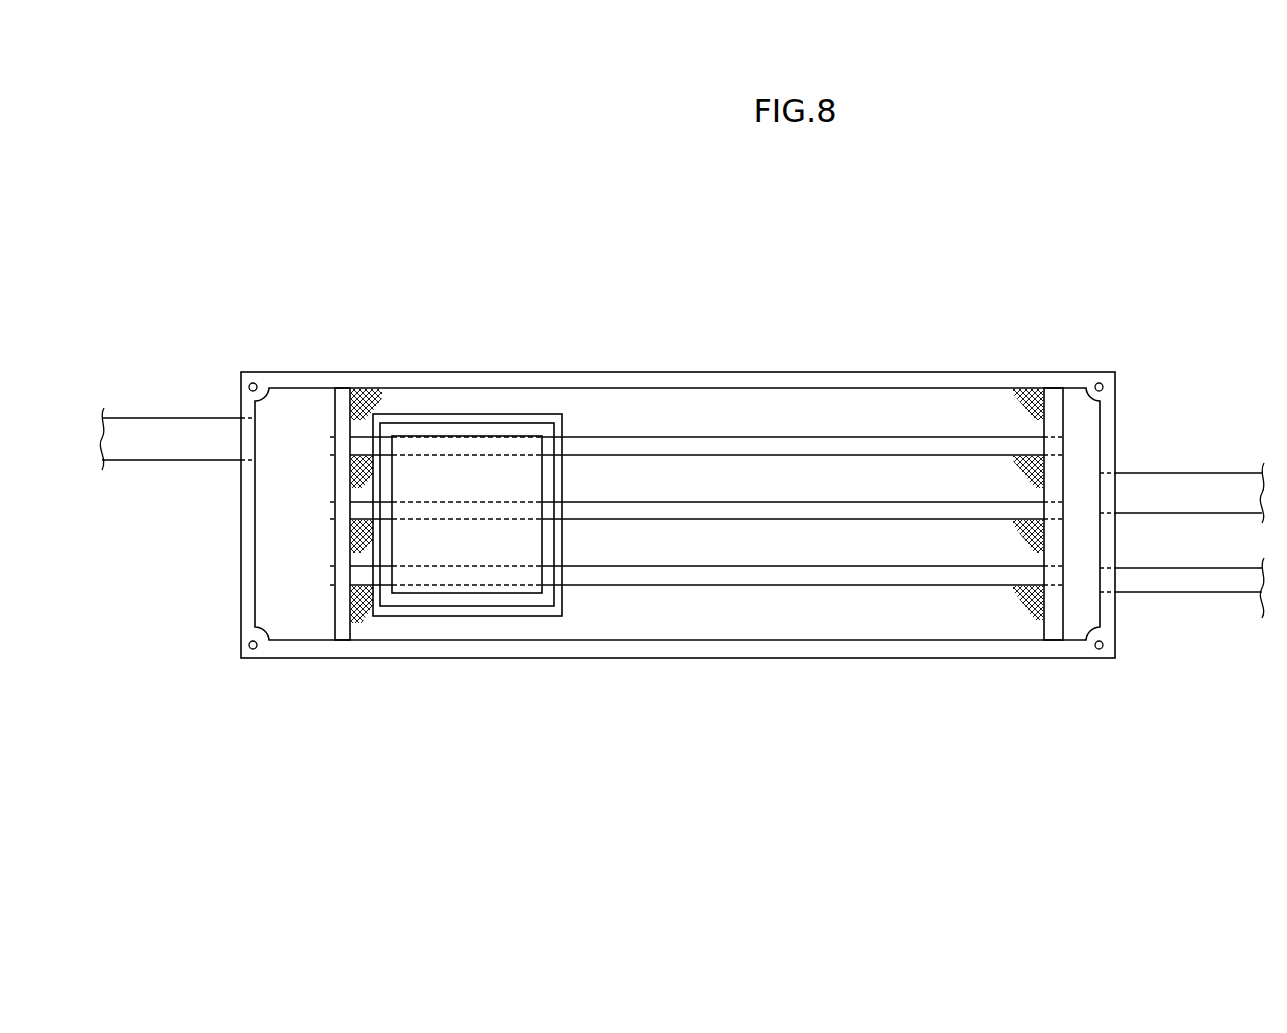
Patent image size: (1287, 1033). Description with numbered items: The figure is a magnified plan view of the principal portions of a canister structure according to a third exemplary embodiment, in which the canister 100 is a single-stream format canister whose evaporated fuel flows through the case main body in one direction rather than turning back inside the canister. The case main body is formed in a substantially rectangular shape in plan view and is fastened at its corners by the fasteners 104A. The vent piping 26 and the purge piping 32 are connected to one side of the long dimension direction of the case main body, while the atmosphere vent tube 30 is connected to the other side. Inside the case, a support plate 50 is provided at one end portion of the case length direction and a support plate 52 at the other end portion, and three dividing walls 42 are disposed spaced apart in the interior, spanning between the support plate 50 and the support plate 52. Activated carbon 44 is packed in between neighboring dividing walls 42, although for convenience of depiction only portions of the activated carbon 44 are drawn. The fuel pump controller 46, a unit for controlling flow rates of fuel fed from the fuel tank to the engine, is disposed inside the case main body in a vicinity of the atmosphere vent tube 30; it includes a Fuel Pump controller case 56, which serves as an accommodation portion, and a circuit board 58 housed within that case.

The canister 100 is at (582, 265).
The screw 104A is at (257, 383).
The atmosphere vent tube 30 is at (143, 418).
The vent piping 26 is at (1222, 473).
The purge piping 32 is at (1199, 595).
The dividing walls 42 is at (918, 566).
The activated carbon 44 is at (1020, 400).
The fuel pump controller 46 is at (511, 460).
The support plate 50 is at (1063, 432).
The support plate 52 is at (335, 545).
The Fuel Pump controller (FPC) case 56 is at (523, 415).
The circuit board 58 is at (523, 482).